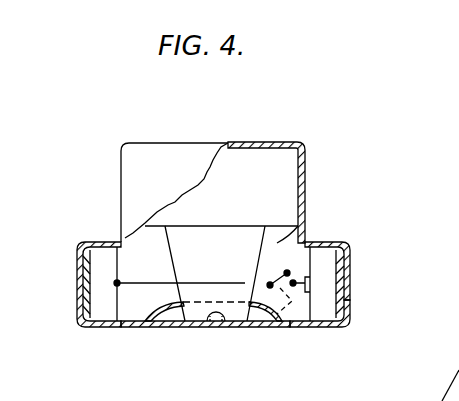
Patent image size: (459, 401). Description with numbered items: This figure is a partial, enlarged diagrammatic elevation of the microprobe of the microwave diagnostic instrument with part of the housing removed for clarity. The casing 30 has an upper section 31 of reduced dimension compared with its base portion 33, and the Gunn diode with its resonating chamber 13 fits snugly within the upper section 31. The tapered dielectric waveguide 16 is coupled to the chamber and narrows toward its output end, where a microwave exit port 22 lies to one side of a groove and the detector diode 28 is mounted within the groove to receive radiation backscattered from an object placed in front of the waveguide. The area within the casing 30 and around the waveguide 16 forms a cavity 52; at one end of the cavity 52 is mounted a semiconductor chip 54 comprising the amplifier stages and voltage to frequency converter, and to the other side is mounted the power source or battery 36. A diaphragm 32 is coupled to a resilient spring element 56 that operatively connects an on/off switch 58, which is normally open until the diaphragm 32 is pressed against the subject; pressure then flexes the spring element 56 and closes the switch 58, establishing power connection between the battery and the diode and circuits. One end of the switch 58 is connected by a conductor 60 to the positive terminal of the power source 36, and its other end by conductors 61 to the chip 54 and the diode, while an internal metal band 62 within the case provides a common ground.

The resonating chamber 13 is at (287, 181).
The tapered dielectric waveguide 16 is at (183, 248).
The microwave exit port 22 is at (198, 326).
The detector diode 28 is at (219, 323).
The casing 30 is at (352, 246).
The upper section 31 is at (121, 186).
The diaphragm 32 is at (298, 328).
The base portion 33 is at (78, 260).
The power source 36 is at (320, 305).
The cavity 52 is at (277, 243).
The semiconductor chip 54 is at (107, 300).
The resilient spring element 56 is at (163, 325).
The on/off switch 58 is at (268, 283).
The conductor 60 is at (303, 280).
The conductors 61 is at (152, 283).
The internal metal band 62 is at (79, 288).